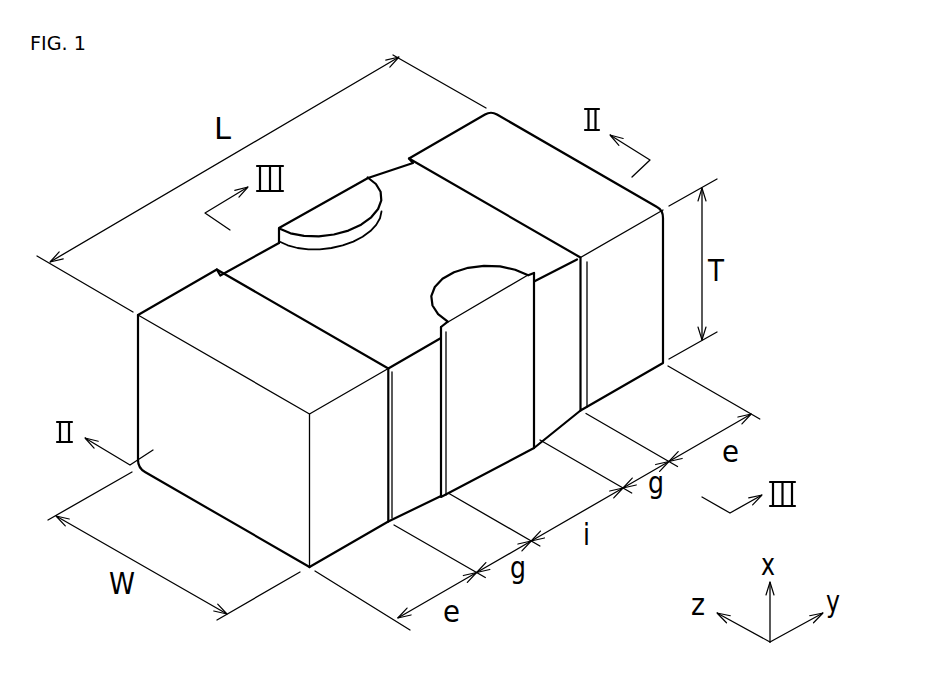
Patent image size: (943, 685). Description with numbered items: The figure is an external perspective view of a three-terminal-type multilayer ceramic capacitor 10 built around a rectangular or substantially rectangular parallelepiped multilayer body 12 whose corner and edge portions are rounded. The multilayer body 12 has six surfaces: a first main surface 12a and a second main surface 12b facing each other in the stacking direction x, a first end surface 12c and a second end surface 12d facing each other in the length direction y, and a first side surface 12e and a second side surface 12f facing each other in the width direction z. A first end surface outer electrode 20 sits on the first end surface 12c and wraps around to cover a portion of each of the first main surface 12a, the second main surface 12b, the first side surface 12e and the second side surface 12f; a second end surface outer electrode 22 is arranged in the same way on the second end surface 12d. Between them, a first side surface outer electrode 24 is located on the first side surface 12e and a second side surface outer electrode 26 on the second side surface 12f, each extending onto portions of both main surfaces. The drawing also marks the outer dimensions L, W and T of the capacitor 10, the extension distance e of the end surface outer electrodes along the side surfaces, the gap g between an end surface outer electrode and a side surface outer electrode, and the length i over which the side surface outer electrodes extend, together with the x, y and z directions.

The multilayer ceramic capacitor 10 is at (168, 97).
The multilayer body 12 is at (432, 329).
The first main surface 12a is at (401, 197).
The second main surface 12b is at (558, 418).
The first end surface 12c is at (238, 488).
The second end surface 12d is at (637, 205).
The first side surface 12e is at (243, 262).
The second side surface 12f is at (408, 483).
The first end surface outer electrode 20 is at (133, 366).
The second end surface outer electrode 22 is at (528, 129).
The first side surface outer electrode 24 is at (323, 200).
The second side surface outer electrode 26 is at (491, 449).